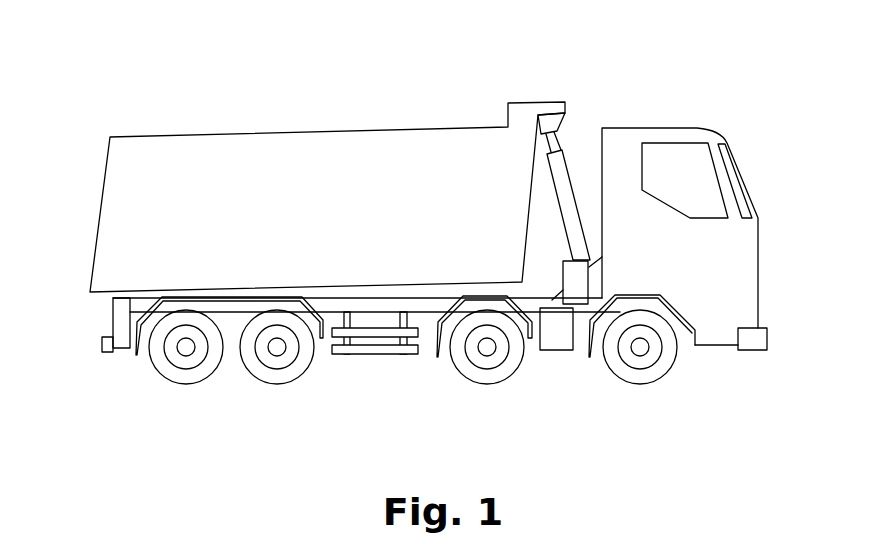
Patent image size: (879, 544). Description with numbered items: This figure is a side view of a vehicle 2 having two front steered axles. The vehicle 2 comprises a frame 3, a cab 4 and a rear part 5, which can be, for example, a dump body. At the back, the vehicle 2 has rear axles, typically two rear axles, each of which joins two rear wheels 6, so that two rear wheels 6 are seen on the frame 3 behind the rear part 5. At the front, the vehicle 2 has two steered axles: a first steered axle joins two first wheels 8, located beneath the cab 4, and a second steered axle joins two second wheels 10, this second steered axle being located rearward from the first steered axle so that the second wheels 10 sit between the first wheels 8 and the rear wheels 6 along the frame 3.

The vehicle 2 is at (402, 214).
The frame 3 is at (422, 312).
The cab 4 is at (662, 141).
The rear part 5 is at (128, 200).
The rear wheels 6 is at (198, 377).
The first wheels 8 is at (668, 362).
The second wheels 10 is at (515, 363).